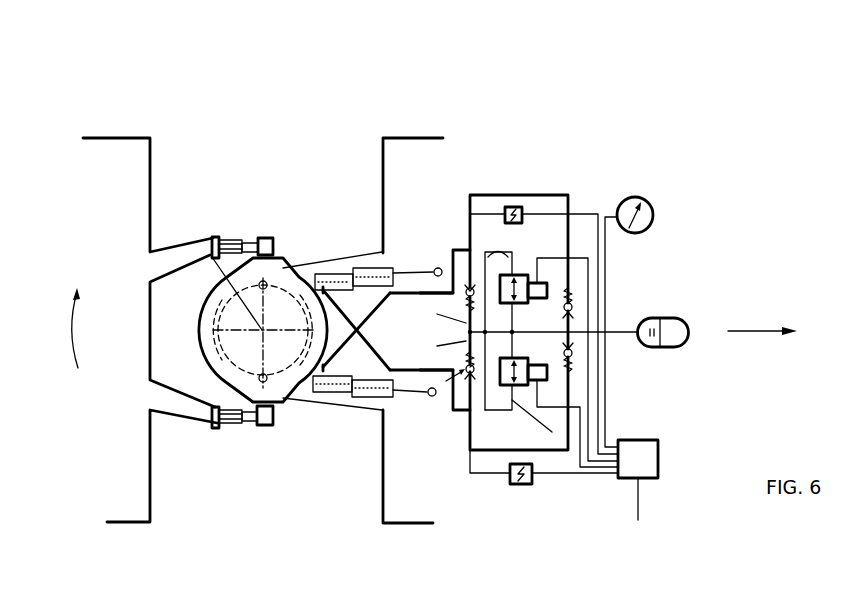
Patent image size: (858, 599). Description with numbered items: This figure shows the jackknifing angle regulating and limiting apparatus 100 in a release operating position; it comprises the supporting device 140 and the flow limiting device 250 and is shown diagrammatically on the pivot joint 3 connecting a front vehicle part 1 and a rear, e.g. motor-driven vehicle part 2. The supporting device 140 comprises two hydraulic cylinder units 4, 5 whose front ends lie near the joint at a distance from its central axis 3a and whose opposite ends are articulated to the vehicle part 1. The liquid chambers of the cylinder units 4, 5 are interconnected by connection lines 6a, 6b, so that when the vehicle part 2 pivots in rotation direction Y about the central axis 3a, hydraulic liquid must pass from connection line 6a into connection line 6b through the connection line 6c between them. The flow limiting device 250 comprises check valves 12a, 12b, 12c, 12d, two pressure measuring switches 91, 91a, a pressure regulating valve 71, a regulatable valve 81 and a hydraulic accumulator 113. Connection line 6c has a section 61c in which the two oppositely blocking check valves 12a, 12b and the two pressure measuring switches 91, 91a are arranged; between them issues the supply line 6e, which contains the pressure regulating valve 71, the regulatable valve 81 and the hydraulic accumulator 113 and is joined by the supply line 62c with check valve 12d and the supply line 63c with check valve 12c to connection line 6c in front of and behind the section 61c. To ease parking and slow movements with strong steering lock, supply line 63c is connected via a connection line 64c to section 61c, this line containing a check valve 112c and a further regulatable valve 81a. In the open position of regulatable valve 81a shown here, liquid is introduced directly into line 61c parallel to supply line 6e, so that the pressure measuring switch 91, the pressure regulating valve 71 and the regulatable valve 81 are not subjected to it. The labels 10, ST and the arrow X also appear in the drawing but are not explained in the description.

The supporting device 140 is at (196, 108).
The jackknifing angle regulating and limiting apparatus 100 is at (602, 98).
The flow limiting device 250 is at (732, 108).
The front vehicle part 1 is at (402, 163).
The rear vehicle part 2 is at (132, 210).
The pivot joint 3 is at (273, 298).
The central axis of the joint 3a is at (213, 252).
The hydraulic cylinder unit 4 is at (366, 262).
The hydraulic cylinder unit 5 is at (347, 392).
The connection line 6a is at (346, 282).
The connection line 6b is at (370, 347).
The connection line 6c is at (436, 330).
The supply line 6e is at (572, 311).
The pressure gauge 10 is at (650, 196).
The check valve 12a is at (584, 304).
The check valve 12b is at (584, 358).
The check valve 12c is at (445, 374).
The check valve 112c is at (441, 378).
The check valve 12d is at (440, 266).
The section of connection line 61c is at (493, 193).
The supply line 62c is at (460, 279).
The supply line 63c is at (477, 400).
The connection line 64c is at (547, 400).
The pressure regulating valve 71 is at (505, 245).
The regulatable valve 81 is at (552, 287).
The regulatable valve 81a is at (552, 378).
The pressure measuring switch 91 is at (519, 206).
The pressure measuring switch 91a is at (520, 485).
The hydraulic accumulator 113 is at (683, 318).
The control unit ST is at (664, 456).
The direction of movement X is at (752, 337).
The rotation direction Y is at (78, 347).